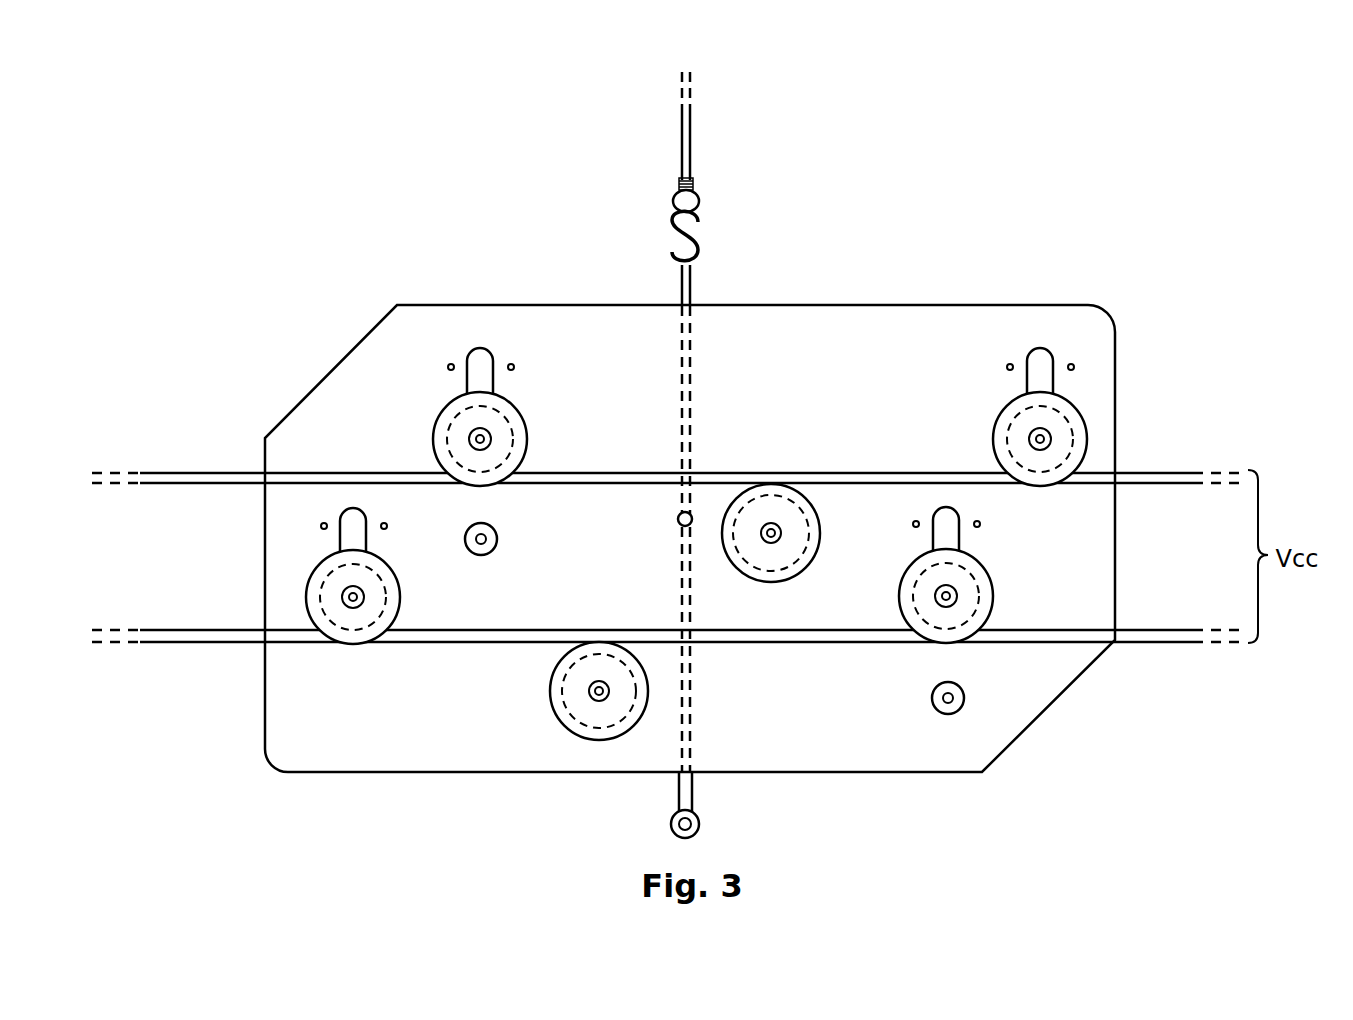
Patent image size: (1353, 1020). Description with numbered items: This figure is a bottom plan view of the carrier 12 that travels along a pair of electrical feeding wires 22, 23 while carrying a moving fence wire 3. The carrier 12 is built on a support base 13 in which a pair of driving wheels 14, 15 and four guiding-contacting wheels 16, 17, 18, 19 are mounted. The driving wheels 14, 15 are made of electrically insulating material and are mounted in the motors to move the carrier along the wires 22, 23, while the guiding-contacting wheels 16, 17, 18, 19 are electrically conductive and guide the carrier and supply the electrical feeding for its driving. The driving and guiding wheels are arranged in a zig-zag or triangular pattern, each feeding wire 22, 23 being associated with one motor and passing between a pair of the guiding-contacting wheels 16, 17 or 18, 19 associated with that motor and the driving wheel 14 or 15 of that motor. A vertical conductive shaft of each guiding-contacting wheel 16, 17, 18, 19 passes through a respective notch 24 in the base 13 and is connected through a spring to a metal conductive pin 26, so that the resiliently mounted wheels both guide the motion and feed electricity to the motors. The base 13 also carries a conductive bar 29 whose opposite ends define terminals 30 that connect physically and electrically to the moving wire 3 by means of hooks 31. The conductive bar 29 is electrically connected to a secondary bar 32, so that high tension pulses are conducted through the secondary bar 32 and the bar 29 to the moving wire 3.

The moving wire 3 is at (690, 143).
The carrier 12 is at (1152, 222).
The support base 13 is at (1115, 325).
The driving wheel 14 is at (575, 725).
The driving wheel 15 is at (783, 582).
The guiding-contacting wheel 16 is at (353, 645).
The guiding-contacting wheel 17 is at (947, 645).
The guiding-contacting wheel 18 is at (432, 432).
The guiding-contacting wheel 19 is at (1088, 438).
The electrical feeding wire 22 is at (232, 645).
The electrical feeding wire 23 is at (175, 473).
The notch 24 is at (494, 352).
The metal conductive pin 26 is at (472, 556).
The conductive bar 29 is at (680, 290).
The terminal 30 is at (700, 263).
The hook 31 is at (700, 235).
The secondary bar 32 is at (678, 520).